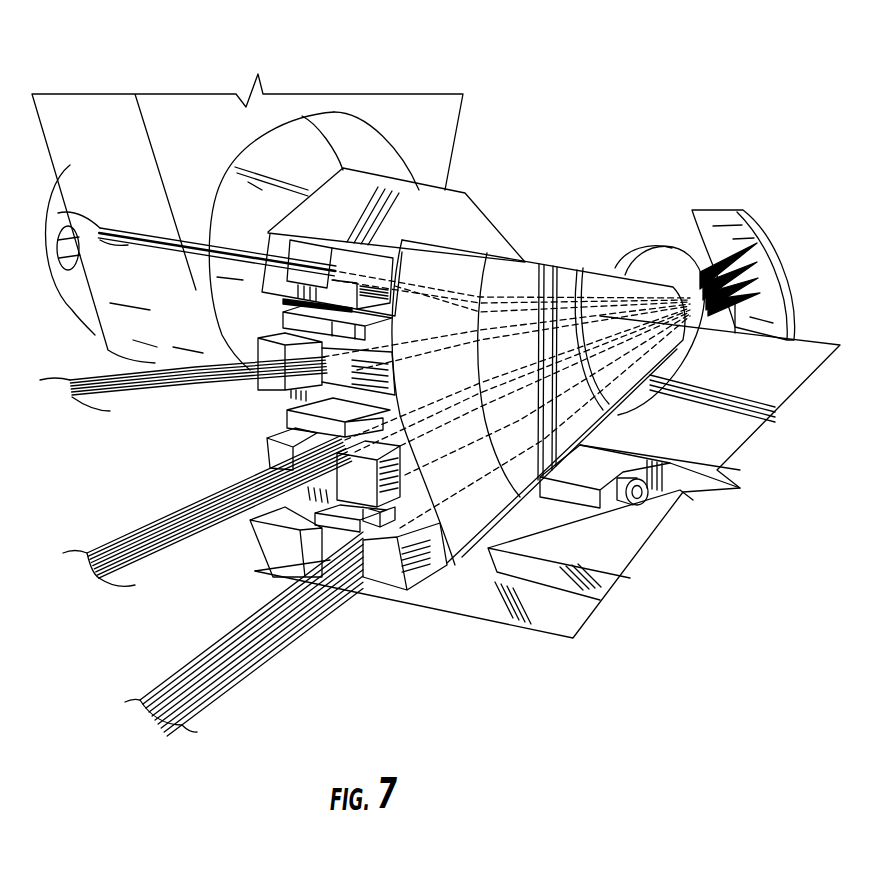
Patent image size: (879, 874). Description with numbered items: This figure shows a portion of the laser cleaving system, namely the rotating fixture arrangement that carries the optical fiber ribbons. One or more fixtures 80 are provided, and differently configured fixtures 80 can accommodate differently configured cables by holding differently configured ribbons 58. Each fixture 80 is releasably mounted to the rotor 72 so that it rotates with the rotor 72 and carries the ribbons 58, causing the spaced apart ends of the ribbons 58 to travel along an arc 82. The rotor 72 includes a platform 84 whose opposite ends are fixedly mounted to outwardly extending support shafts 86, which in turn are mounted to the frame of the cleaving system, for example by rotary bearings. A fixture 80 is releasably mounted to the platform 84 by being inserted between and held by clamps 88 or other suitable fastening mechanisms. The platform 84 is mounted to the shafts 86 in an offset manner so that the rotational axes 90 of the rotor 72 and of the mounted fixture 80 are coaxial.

The ribbons 58 is at (112, 233).
The rotor 72 is at (497, 650).
The fixture 80 is at (600, 272).
The arc 82 is at (787, 258).
The platform 84 is at (440, 593).
The support shafts 86 is at (265, 205).
The clamps 88 is at (622, 553).
The rotational axes 90 is at (752, 335).